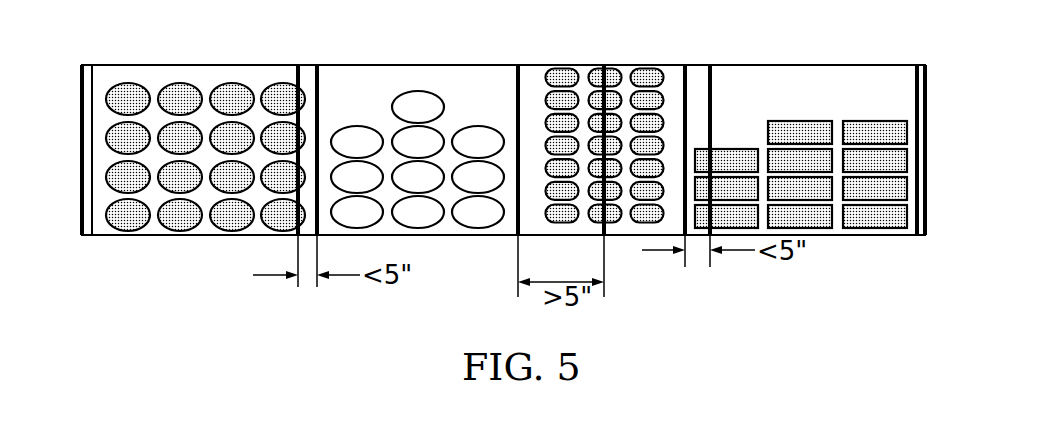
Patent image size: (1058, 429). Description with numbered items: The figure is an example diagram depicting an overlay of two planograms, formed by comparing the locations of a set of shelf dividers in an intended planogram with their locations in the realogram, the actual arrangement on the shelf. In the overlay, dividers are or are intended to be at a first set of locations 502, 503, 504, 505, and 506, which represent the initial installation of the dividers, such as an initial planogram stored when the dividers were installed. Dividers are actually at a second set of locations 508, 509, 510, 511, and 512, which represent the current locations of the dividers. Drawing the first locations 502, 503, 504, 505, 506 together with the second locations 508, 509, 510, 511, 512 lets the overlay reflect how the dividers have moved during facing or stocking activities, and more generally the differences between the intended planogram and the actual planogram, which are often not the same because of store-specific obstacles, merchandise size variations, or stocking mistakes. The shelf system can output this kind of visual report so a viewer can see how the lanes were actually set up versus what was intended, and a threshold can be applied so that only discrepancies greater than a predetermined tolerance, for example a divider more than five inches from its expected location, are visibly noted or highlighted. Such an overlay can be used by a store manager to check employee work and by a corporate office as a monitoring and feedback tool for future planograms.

The first divider location 502 is at (92, 237).
The first divider location 503 is at (317, 65).
The first divider location 504 is at (518, 65).
The first divider location 505 is at (685, 65).
The first divider location 506 is at (925, 65).
The second divider location 508 is at (82, 64).
The second divider location 509 is at (297, 65).
The second divider location 510 is at (604, 65).
The second divider location 511 is at (710, 65).
The second divider location 512 is at (917, 65).